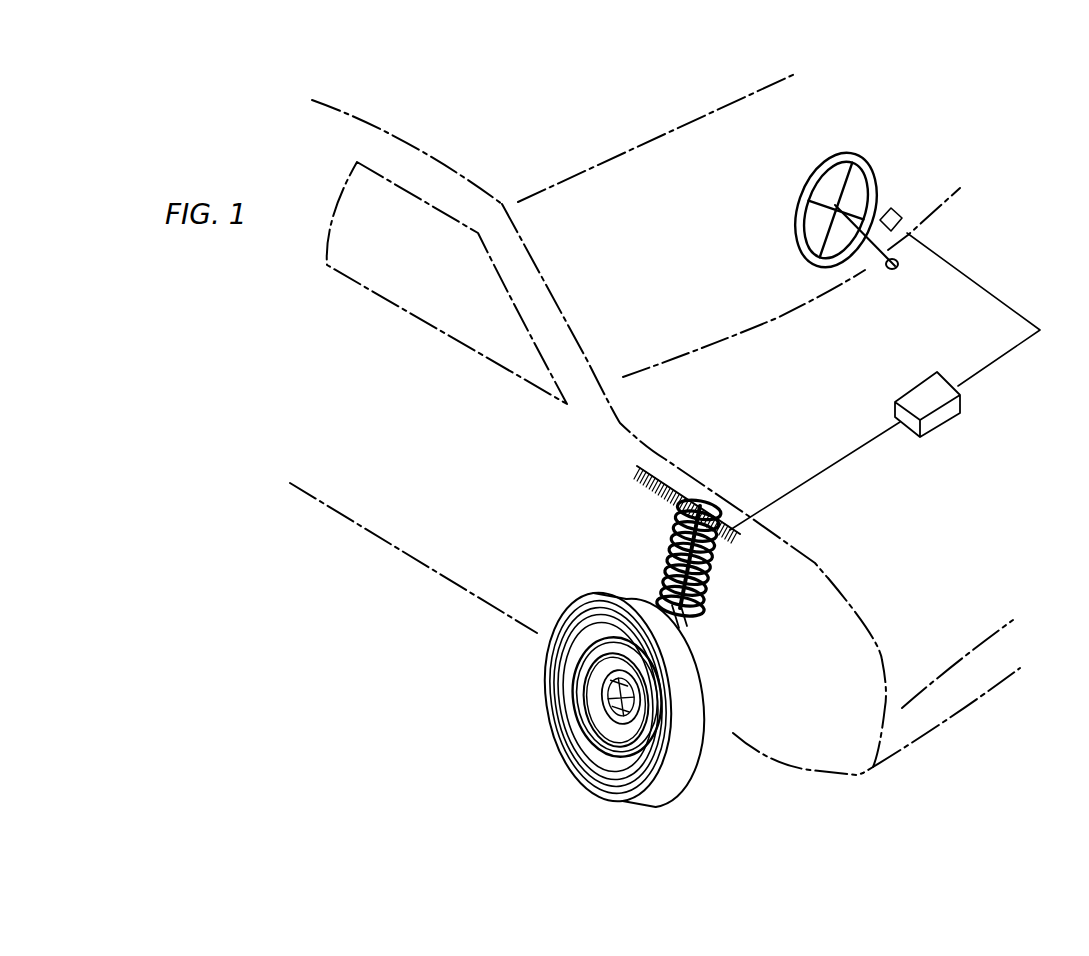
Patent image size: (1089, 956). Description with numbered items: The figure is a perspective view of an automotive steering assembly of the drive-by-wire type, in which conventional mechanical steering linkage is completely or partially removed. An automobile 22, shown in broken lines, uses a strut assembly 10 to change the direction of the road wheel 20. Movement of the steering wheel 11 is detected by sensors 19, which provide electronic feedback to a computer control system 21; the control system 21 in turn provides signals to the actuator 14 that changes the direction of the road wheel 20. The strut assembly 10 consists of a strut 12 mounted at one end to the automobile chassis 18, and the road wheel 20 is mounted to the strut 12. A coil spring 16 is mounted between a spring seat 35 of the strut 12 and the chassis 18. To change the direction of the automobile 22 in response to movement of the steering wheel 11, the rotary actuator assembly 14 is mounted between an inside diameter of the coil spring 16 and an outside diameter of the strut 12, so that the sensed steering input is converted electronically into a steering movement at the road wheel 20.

The strut assembly 10 is at (603, 552).
The steering wheel 11 is at (872, 152).
The strut 12 is at (686, 622).
The rotary actuator assembly 14 is at (711, 562).
The coil spring 16 is at (660, 545).
The automobile chassis 18 is at (676, 493).
The sensors 19 is at (900, 209).
The road wheel 20 is at (545, 725).
The computer control system 21 is at (939, 421).
The automobile 22 is at (513, 628).
The spring seat 35 is at (662, 596).